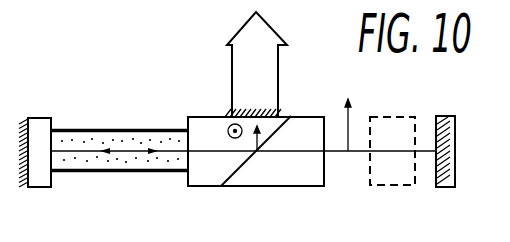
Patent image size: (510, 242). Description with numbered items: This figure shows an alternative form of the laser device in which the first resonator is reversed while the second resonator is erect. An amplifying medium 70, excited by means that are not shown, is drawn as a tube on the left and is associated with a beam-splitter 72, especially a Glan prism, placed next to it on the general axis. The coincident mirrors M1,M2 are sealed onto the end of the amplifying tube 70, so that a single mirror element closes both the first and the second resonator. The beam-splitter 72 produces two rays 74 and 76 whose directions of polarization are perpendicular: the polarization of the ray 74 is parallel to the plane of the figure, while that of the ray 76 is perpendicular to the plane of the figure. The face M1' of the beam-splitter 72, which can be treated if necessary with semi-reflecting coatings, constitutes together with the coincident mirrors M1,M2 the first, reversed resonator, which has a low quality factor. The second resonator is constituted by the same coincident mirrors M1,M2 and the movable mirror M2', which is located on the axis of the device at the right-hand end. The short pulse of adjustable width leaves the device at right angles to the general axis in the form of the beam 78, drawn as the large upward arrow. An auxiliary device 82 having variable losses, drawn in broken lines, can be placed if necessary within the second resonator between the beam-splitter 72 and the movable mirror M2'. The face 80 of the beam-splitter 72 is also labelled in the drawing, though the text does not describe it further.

The amplifying medium 70 is at (115, 128).
The beam-splitter 72 is at (248, 193).
The ray 74 is at (340, 154).
The ray 76 is at (291, 116).
The beam 78 is at (232, 57).
The crystal end face 80 is at (324, 171).
The auxiliary device 82 is at (392, 185).
The face of beam-splitter M1' is at (225, 92).
The movable mirror M2' is at (449, 175).
The coincident mirrors M1,M2 is at (23, 171).